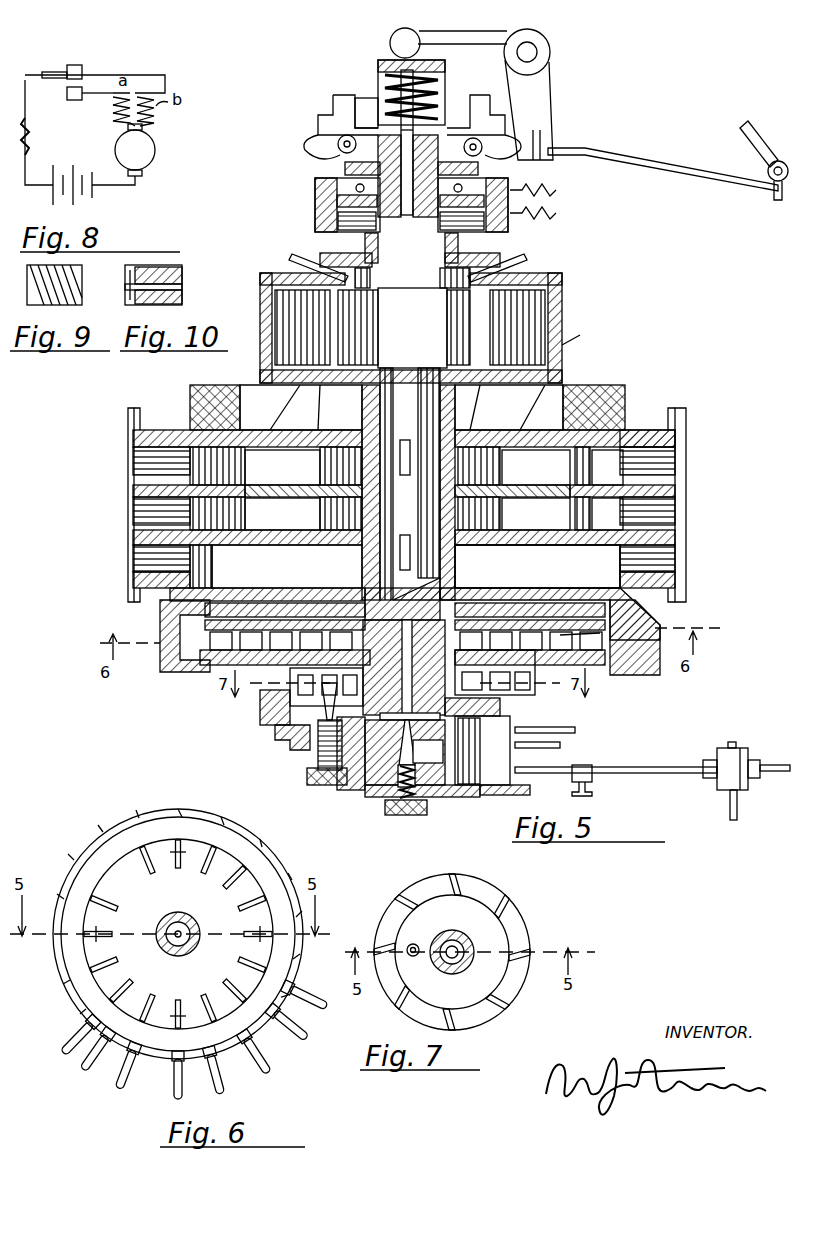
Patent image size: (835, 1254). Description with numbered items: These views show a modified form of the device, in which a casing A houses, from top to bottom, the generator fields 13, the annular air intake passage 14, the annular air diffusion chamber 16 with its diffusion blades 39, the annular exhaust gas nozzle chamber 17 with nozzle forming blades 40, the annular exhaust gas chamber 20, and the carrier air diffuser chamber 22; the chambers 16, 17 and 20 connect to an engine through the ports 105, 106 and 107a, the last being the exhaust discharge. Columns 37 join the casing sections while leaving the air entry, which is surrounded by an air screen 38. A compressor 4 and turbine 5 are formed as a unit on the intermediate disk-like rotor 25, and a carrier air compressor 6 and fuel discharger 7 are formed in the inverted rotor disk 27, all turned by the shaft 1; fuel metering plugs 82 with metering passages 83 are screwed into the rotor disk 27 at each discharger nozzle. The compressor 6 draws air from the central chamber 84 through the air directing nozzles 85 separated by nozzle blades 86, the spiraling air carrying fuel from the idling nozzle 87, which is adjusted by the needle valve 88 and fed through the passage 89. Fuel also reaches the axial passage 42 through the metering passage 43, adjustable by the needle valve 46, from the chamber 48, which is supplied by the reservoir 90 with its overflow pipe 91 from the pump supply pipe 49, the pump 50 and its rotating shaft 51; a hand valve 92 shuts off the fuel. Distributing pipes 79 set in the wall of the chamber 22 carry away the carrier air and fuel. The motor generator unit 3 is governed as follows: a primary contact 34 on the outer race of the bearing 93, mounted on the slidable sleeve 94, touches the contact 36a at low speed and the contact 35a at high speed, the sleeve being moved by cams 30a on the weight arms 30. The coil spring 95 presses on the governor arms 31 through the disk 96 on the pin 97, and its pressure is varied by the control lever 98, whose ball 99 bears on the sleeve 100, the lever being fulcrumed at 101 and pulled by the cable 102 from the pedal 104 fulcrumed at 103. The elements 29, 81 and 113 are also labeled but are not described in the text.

In FIG. 5, the shaft 1 is at (400, 415).
In FIG. 6, the shaft 1 is at (192, 941).
In FIG. 7, the shaft 1 is at (464, 962).
In FIG. 5, the motor generator unit 3 is at (412, 328).
In FIG. 8, the motor generator unit 3 is at (135, 150).
In FIG. 5, the compressor 4 is at (536, 467).
In FIG. 5, the turbine 5 is at (536, 514).
In FIG. 5, the compressor 6 is at (591, 634).
In FIG. 6, the compressor 6 is at (130, 880).
In FIG. 5, the fuel discharger 7 is at (528, 578).
In FIG. 5, the generator (motor) fields 13 is at (527, 312).
In FIG. 5, the air intake passage 14 is at (509, 407).
In FIG. 5, the air diffusion chamber 16 is at (636, 432).
In FIG. 5, the exhaust gas nozzle chamber 17 is at (607, 514).
In FIG. 5, the exhaust gas chamber 20 is at (537, 566).
In FIG. 5, the carrier air diffuser chamber 22 is at (195, 660).
In FIG. 6, the carrier air diffuser chamber 22 is at (100, 852).
In FIG. 5, the disk-like rotor 25 is at (565, 477).
In FIG. 5, the rotor disk 27 is at (287, 566).
In FIG. 5, the slanted bar 29 is at (528, 254).
In FIG. 5, the weight arms 30 is at (333, 95).
In FIG. 5, the cams 30a is at (320, 136).
In FIG. 5, the governor arms 31 is at (366, 113).
In FIG. 5, the primary contact 34 is at (530, 170).
In FIG. 8, the primary contact 34 is at (50, 72).
In FIG. 5, the contact 35a is at (338, 218).
In FIG. 8, the contact 35a is at (67, 96).
In FIG. 5, the contact 36a is at (315, 190).
In FIG. 8, the contact 36a is at (84, 66).
In FIG. 5, the columns 37 is at (301, 407).
In FIG. 5, the air screen 38 is at (625, 388).
In FIG. 5, the diffusion blades 39 is at (232, 465).
In FIG. 5, the nozzle forming blades 40 is at (232, 515).
In FIG. 5, the axial passage 42 is at (440, 715).
In FIG. 6, the axial passage 42 is at (190, 927).
In FIG. 7, the axial passage 42 is at (468, 930).
In FIG. 5, the metering passage 43 is at (385, 805).
In FIG. 5, the needle valve 46 is at (420, 790).
In FIG. 5, the chamber 48 is at (428, 751).
In FIG. 5, the pump supply pipe 49 is at (690, 756).
In FIG. 5, the pump 50 is at (746, 758).
In FIG. 5, the rotating shaft 51 is at (740, 808).
In FIG. 6, the distributing pipes 79 is at (85, 1045).
In FIG. 8, the battery 81 is at (60, 170).
In FIG. 5, the fuel metering plug 82 is at (210, 615).
In FIG. 9, the fuel metering plug 82 is at (82, 284).
In FIG. 10, the fuel metering plug 82 is at (182, 274).
In FIG. 10, the metering passage 83 is at (182, 288).
In FIG. 5, the central chamber 84 is at (495, 672).
In FIG. 5, the air directing nozzles 85 is at (560, 688).
In FIG. 7, the air directing nozzles 85 is at (528, 930).
In FIG. 7, the nozzle blades 86 is at (500, 905).
In FIG. 5, the idling nozzle 87 is at (326, 684).
In FIG. 7, the idling nozzle 87 is at (413, 957).
In FIG. 5, the needle valve 88 is at (300, 742).
In FIG. 5, the passage 89 is at (345, 785).
In FIG. 5, the reservoir 90 is at (563, 746).
In FIG. 5, the overflow pipe 91 is at (578, 730).
In FIG. 5, the hand valve 92 is at (592, 790).
In FIG. 5, the bearing 93 is at (345, 170).
In FIG. 5, the sleeve 94 is at (338, 148).
In FIG. 5, the coil spring 95 is at (440, 100).
In FIG. 5, the disk 96 is at (372, 80).
In FIG. 5, the pin 97 is at (430, 150).
In FIG. 5, the control lever 98 is at (524, 30).
In FIG. 5, the ball 99 is at (430, 31).
In FIG. 5, the sleeve 100 is at (388, 36).
In FIG. 5, the fulcrum 101 is at (537, 52).
In FIG. 5, the flexible rod or cable 102 is at (628, 153).
In FIG. 5, the fulcrum 103 is at (768, 165).
In FIG. 5, the pedal or manual lever 104 is at (748, 122).
In FIG. 5, the port 105 is at (688, 458).
In FIG. 5, the port 106 is at (688, 506).
In FIG. 5, the port 107a is at (688, 556).
In FIG. 5, the flange 113 is at (682, 410).
In FIG. 5, the casing A is at (578, 335).